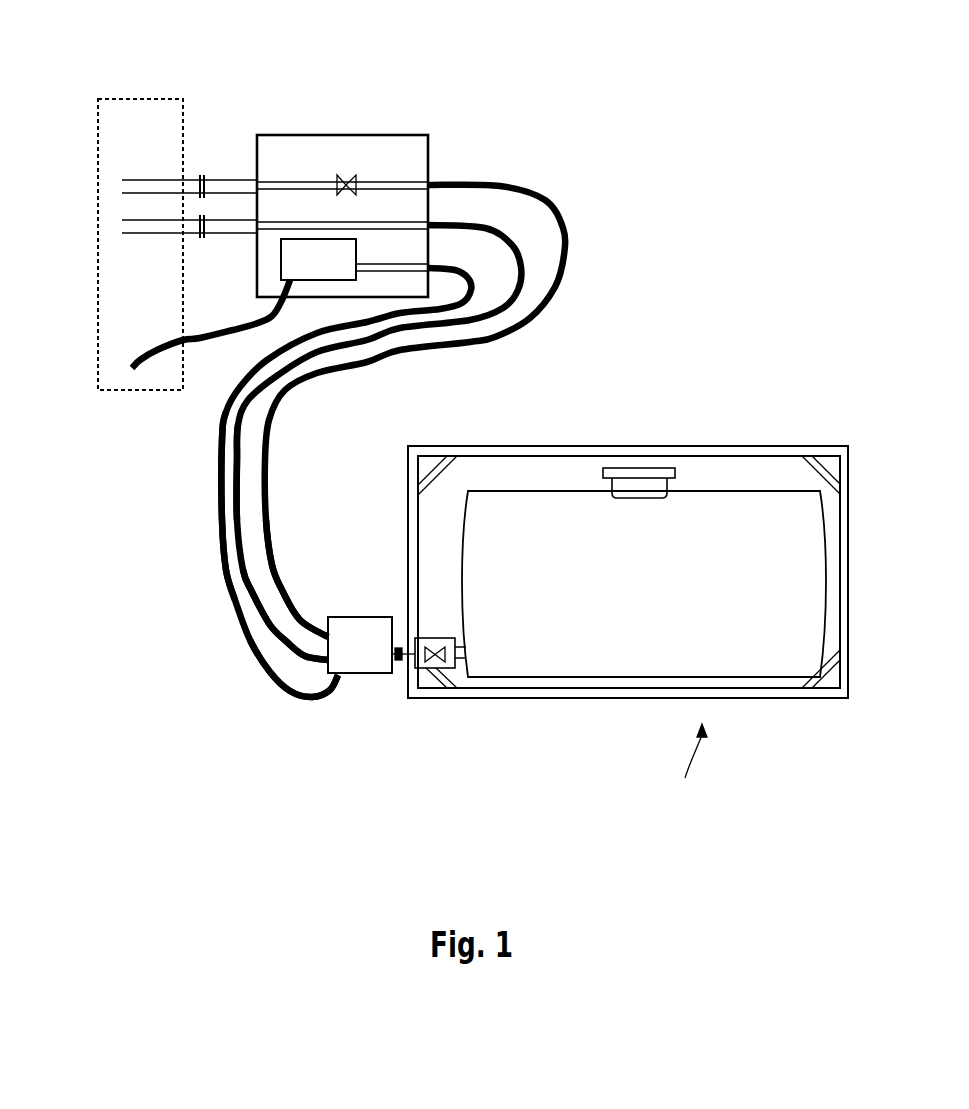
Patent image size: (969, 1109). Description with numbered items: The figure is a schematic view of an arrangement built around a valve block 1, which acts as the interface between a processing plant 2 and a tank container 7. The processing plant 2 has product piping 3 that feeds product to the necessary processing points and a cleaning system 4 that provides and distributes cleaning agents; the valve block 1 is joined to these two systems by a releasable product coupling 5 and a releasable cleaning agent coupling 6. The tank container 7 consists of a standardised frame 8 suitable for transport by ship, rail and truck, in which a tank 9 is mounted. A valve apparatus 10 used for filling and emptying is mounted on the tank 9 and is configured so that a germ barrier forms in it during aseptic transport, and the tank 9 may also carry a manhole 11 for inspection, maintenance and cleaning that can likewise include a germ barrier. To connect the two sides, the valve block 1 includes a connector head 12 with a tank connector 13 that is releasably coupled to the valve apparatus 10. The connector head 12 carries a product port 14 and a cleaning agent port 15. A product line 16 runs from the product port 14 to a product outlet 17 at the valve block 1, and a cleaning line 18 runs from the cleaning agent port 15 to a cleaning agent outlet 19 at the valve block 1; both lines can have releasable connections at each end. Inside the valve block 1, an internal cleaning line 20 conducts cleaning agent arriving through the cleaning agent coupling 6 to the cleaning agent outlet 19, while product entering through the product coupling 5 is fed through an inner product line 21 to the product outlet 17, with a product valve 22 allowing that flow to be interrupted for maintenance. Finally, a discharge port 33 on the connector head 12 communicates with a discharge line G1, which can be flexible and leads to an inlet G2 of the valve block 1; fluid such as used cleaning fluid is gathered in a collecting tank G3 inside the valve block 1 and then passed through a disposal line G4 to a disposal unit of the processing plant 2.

The valve block 1 is at (415, 135).
The processing plant 2 is at (131, 99).
The product piping 3 is at (140, 187).
The cleaning system 4 is at (137, 225).
The releasable product coupling 5 is at (204, 176).
The releasable cleaning agent coupling 6 is at (203, 238).
The tank container 7 is at (689, 764).
The frame 8 is at (727, 448).
The tank 9 is at (553, 652).
The valve apparatus 10 is at (445, 662).
The manhole 11 is at (640, 487).
The connector head 12 is at (372, 635).
The tank connector 13 is at (398, 662).
The product port 14 is at (325, 639).
The cleaning agent port 15 is at (327, 662).
The product line 16 is at (262, 485).
The product outlet 17 is at (430, 185).
The cleaning line 18 is at (232, 455).
The cleaning agent outlet 19 is at (430, 227).
The internal cleaning line 20 is at (290, 227).
The internal line 21 is at (308, 190).
The product valve 22 is at (350, 190).
The discharge port 33 is at (352, 678).
The discharge line G1 is at (233, 592).
The inlet G2 is at (430, 267).
The collecting tank G3 is at (337, 263).
The disposal line G4 is at (178, 343).